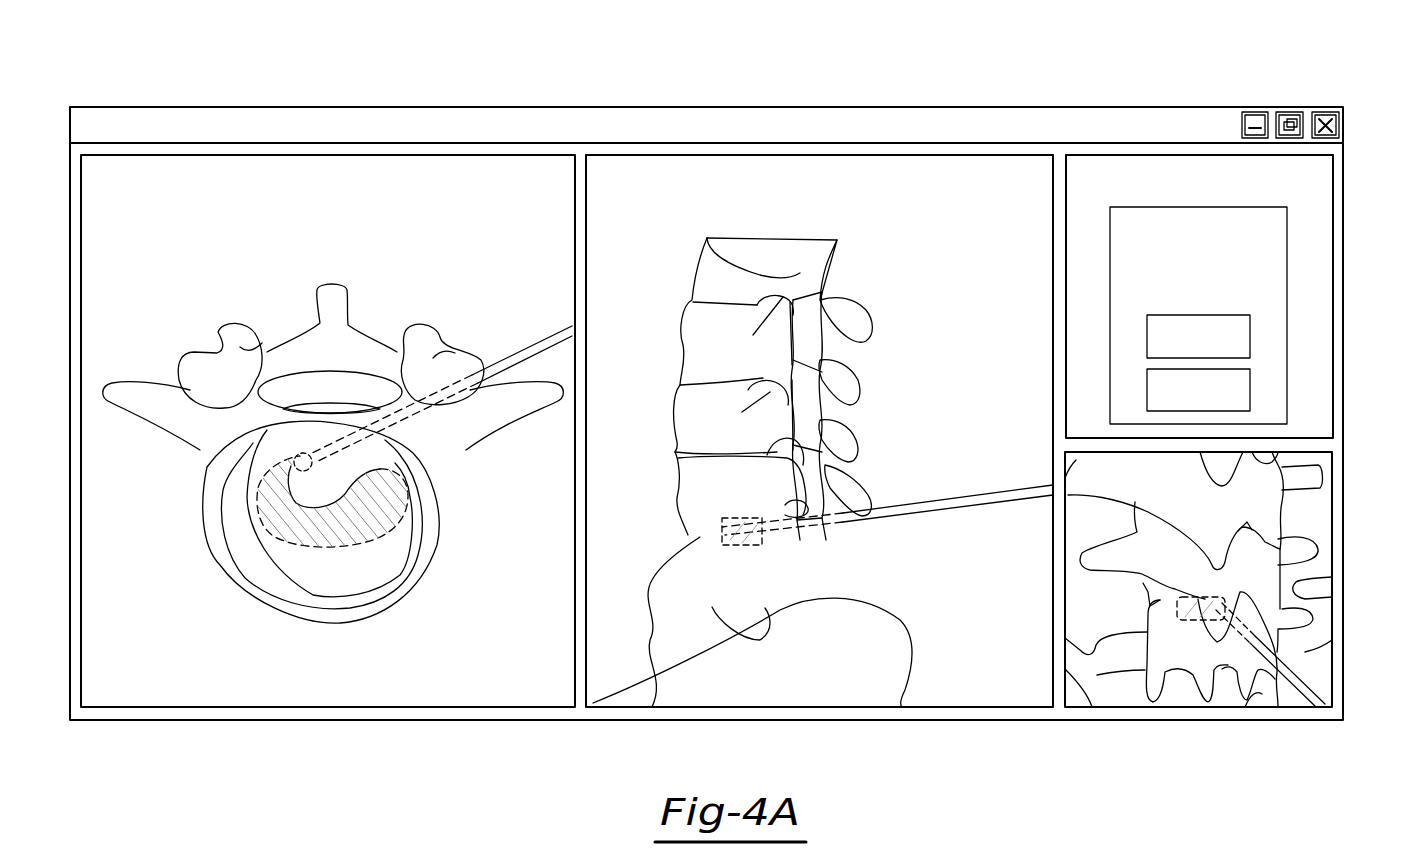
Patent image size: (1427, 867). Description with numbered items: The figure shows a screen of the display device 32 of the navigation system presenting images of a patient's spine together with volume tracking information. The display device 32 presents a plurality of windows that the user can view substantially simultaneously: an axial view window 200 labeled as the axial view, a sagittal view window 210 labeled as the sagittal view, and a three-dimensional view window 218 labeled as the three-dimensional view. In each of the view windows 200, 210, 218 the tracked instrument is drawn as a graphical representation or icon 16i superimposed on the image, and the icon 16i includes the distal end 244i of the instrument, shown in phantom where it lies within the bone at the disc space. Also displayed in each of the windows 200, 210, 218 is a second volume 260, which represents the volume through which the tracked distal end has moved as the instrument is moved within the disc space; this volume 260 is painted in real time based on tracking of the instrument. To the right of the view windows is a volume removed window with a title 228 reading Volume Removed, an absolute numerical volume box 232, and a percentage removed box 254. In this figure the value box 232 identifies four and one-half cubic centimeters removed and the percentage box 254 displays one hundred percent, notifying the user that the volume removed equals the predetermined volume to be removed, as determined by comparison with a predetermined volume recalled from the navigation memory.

The display device 32 is at (522, 100).
The axial view window 200 is at (223, 158).
The sagittal view window 210 is at (757, 160).
The 3D view window 218 is at (1307, 650).
The title 228 is at (1250, 254).
The absolute numerical volume box 232 is at (1250, 337).
The percentage removed box 254 is at (1250, 387).
The instrument icon 16i is at (467, 383).
The distal end icon 244i is at (270, 467).
The second volume 260 is at (397, 530).